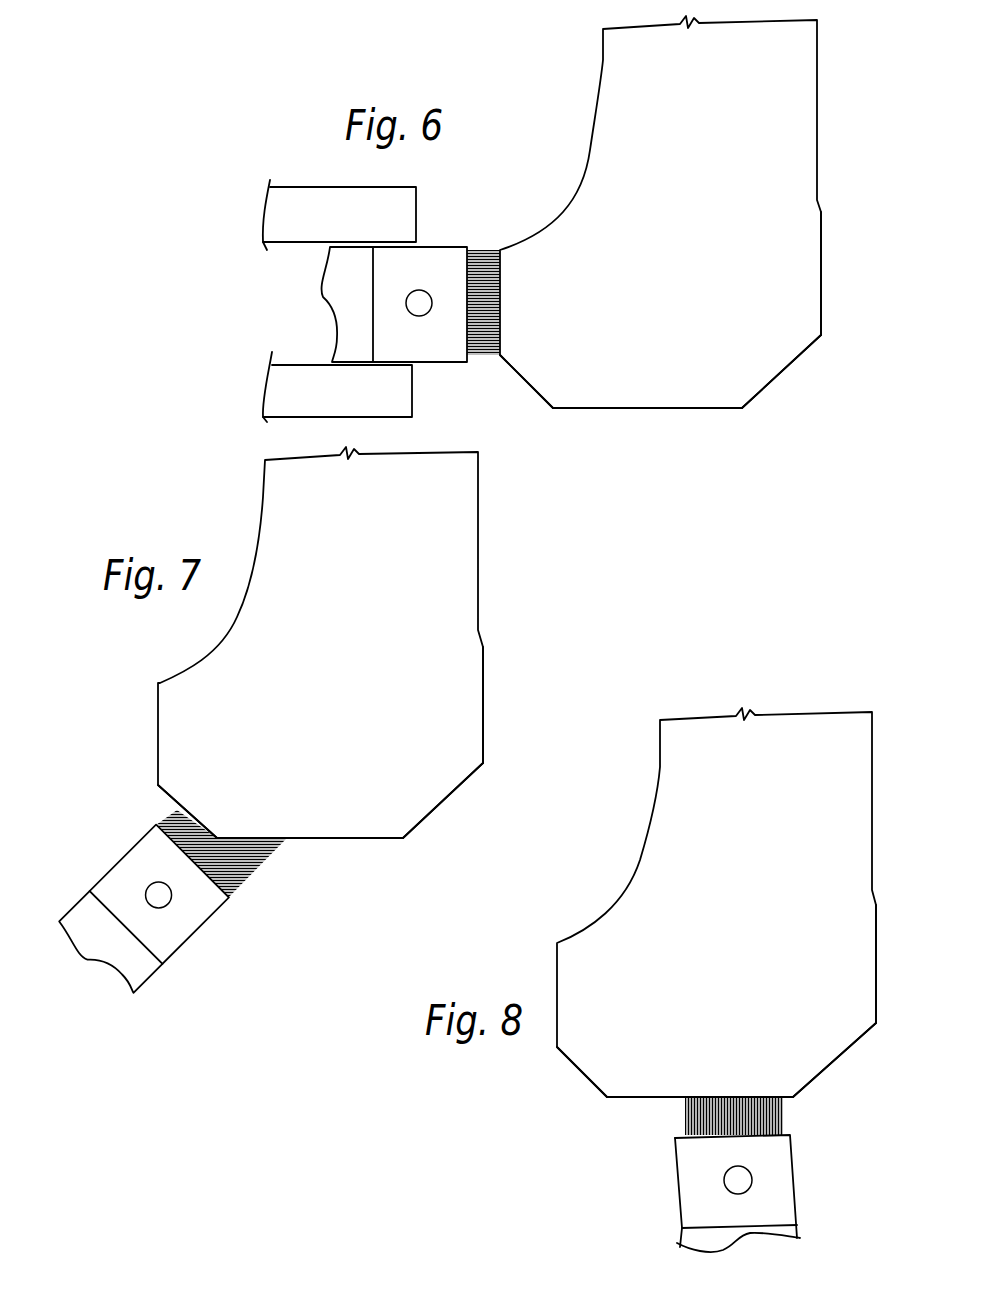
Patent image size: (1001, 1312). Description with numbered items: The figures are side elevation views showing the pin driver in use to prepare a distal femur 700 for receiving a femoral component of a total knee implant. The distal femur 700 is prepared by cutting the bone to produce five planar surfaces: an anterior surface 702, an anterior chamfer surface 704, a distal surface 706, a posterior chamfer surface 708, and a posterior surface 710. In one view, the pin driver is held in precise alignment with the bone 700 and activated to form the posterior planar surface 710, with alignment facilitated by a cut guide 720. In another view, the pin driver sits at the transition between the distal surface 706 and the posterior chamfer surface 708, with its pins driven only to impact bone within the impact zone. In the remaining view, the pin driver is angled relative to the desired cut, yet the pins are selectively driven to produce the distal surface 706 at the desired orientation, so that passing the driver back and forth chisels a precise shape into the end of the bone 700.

In FIG. 6, the distal femur 700 is at (712, 311).
In FIG. 7, the distal femur 700 is at (360, 727).
In FIG. 8, the distal femur 700 is at (752, 970).
In FIG. 6, the anterior surface 702 is at (820, 265).
In FIG. 7, the anterior surface 702 is at (483, 697).
In FIG. 8, the anterior surface 702 is at (873, 968).
In FIG. 6, the anterior chamfer surface 704 is at (793, 363).
In FIG. 7, the anterior chamfer surface 704 is at (455, 792).
In FIG. 8, the anterior chamfer surface 704 is at (820, 1077).
In FIG. 6, the distal surface 706 is at (703, 410).
In FIG. 7, the distal surface 706 is at (368, 840).
In FIG. 8, the distal surface 706 is at (628, 1098).
In FIG. 6, the posterior chamfer surface 708 is at (507, 378).
In FIG. 7, the posterior chamfer surface 708 is at (168, 800).
In FIG. 8, the posterior chamfer surface 708 is at (572, 1062).
In FIG. 6, the posterior surface 710 is at (503, 277).
In FIG. 7, the posterior surface 710 is at (157, 703).
In FIG. 8, the posterior surface 710 is at (553, 967).
In FIG. 6, the cut guide 720 is at (303, 225).